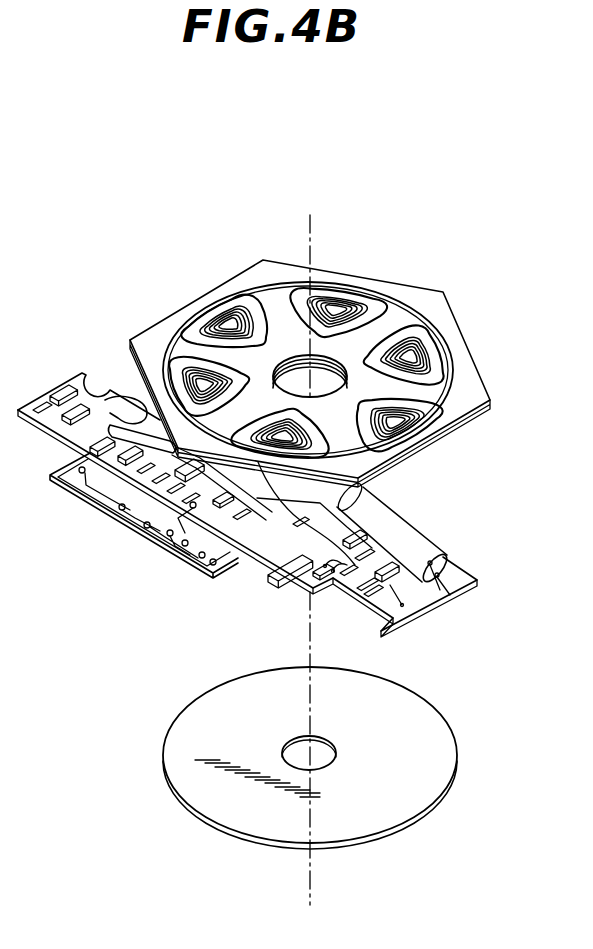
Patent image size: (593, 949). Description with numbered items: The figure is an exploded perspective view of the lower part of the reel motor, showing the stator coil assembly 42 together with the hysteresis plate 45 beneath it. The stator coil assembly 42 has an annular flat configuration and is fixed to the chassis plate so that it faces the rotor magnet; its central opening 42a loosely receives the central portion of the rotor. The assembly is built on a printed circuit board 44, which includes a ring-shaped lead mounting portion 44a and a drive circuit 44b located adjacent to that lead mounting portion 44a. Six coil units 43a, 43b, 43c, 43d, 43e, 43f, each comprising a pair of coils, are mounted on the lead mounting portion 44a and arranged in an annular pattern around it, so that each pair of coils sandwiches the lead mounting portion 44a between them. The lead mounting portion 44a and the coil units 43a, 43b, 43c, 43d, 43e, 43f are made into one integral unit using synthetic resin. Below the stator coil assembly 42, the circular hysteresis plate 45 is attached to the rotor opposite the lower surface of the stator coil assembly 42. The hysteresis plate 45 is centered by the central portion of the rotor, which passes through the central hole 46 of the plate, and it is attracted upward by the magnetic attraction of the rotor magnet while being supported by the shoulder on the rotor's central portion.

The stator coil assembly 42 is at (187, 347).
The central opening 42a is at (333, 355).
The coil unit 43a is at (162, 362).
The coil unit 43b is at (232, 318).
The coil unit 43c is at (333, 312).
The coil unit 43d is at (432, 352).
The coil unit 43e is at (433, 417).
The coil unit 43f is at (327, 440).
The printed circuit board 44 is at (410, 603).
The lead mounting portion 44a is at (489, 418).
The drive circuit 44b is at (286, 553).
The hysteresis plate 45 is at (446, 757).
The central hole 46 is at (284, 752).